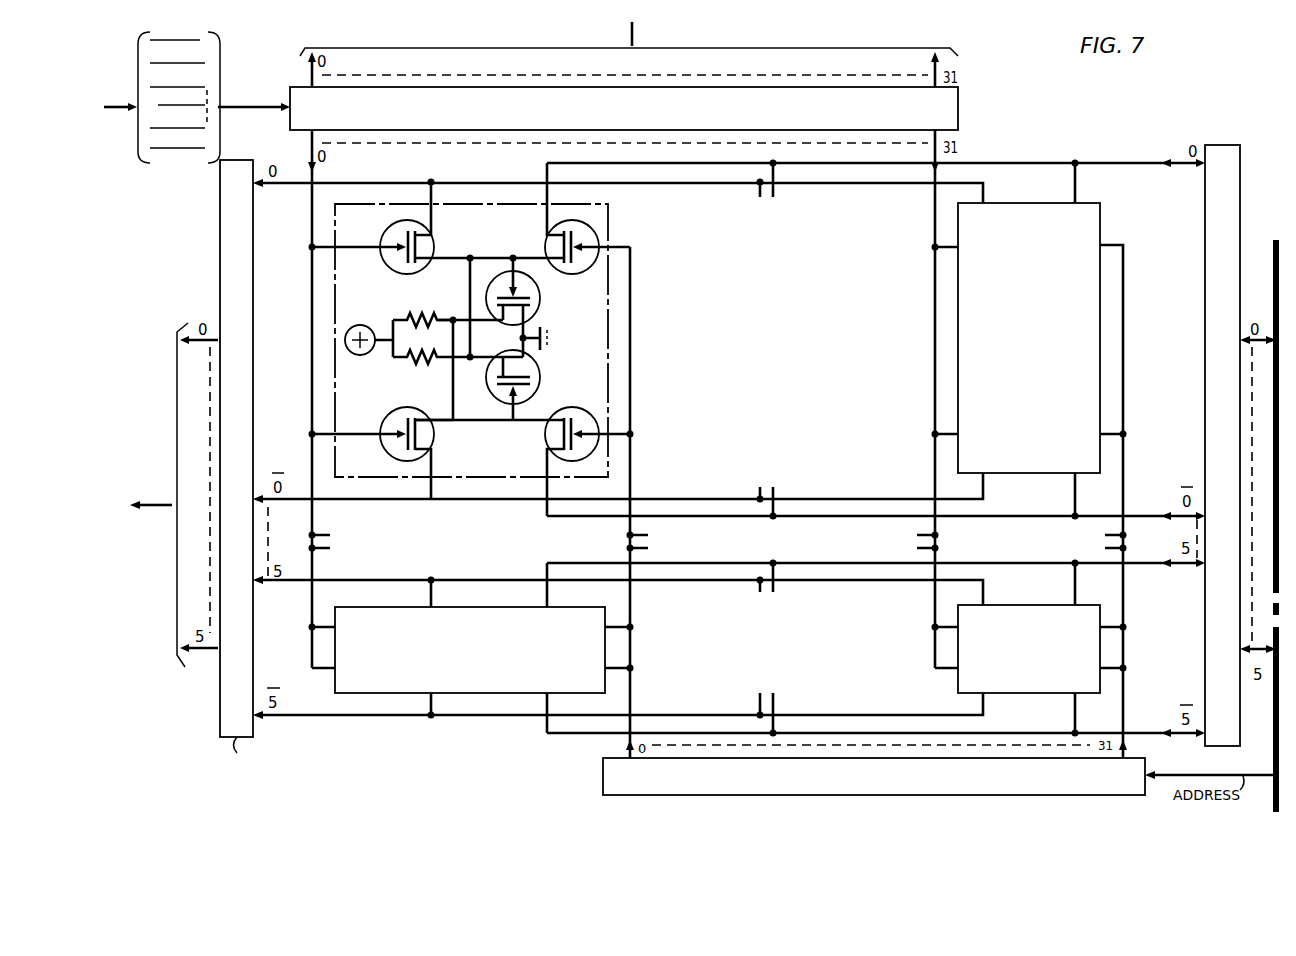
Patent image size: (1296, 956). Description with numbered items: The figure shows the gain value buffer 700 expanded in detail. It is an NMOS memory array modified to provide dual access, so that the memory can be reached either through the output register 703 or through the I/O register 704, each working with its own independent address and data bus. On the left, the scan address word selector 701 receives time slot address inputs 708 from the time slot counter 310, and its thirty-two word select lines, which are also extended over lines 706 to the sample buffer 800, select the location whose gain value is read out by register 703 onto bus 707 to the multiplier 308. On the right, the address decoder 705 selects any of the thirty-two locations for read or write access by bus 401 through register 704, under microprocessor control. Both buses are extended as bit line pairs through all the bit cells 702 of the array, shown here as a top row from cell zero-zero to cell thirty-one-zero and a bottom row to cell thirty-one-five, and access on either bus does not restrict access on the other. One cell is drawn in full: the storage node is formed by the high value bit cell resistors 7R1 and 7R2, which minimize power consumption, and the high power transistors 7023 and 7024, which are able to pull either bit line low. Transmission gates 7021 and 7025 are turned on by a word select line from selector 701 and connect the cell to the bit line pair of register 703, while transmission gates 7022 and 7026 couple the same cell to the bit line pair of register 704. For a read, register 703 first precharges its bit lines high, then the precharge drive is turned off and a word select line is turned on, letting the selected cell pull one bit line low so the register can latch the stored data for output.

The gain value buffer 700 is at (797, 391).
The scan address word selector 701 is at (960, 103).
The bit cell 702 is at (608, 206).
The register 703 is at (232, 160).
The register 704 is at (1222, 145).
The address decoder 705 is at (603, 775).
The scan address lines to sample buffer 706 is at (654, 32).
The bus 707 is at (160, 484).
The time slot address inputs 708 is at (118, 163).
The transmission gate 7021 is at (432, 224).
The transmission gate 7022 is at (580, 268).
The transistor 7023 is at (540, 300).
The transistor 7024 is at (540, 372).
The transmission gate 7025 is at (428, 440).
The transmission gate 7026 is at (552, 438).
The bit cell resistor 7R1 is at (418, 318).
The bit cell resistor 7R2 is at (418, 362).
The sample buffer 800 is at (749, 37).
The time slot counter 310 is at (143, 215).
The multiplier 308 is at (148, 450).
The bus 401 is at (1272, 504).